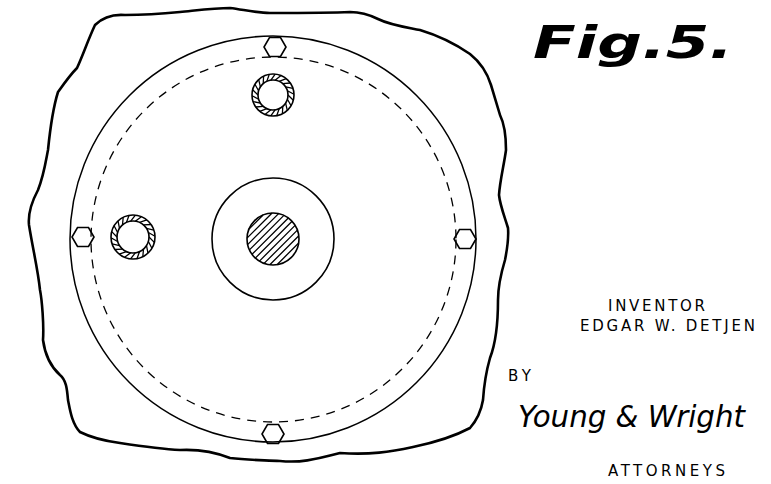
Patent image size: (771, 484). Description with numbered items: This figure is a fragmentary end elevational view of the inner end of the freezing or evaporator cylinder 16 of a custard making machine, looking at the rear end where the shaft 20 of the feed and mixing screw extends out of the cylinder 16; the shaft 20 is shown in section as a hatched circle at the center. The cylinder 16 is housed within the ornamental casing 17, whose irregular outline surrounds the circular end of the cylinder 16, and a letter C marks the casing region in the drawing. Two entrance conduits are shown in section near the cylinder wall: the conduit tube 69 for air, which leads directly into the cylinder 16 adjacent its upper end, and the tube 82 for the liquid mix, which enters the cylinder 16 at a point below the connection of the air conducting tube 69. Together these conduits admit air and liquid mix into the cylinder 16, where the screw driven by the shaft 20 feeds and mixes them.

The freezing cylinder 16 is at (426, 182).
The ornamental casing 17 is at (437, 6).
The shaft 20 is at (292, 216).
The conduit tube 69 is at (294, 89).
The tube 82 is at (136, 215).
The casing C is at (468, 71).